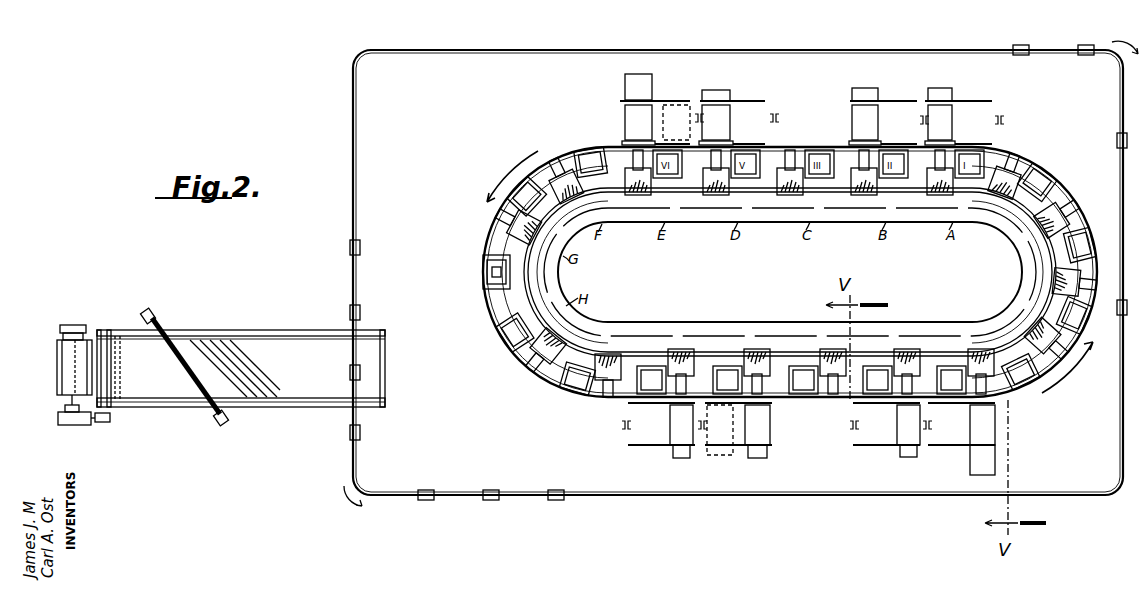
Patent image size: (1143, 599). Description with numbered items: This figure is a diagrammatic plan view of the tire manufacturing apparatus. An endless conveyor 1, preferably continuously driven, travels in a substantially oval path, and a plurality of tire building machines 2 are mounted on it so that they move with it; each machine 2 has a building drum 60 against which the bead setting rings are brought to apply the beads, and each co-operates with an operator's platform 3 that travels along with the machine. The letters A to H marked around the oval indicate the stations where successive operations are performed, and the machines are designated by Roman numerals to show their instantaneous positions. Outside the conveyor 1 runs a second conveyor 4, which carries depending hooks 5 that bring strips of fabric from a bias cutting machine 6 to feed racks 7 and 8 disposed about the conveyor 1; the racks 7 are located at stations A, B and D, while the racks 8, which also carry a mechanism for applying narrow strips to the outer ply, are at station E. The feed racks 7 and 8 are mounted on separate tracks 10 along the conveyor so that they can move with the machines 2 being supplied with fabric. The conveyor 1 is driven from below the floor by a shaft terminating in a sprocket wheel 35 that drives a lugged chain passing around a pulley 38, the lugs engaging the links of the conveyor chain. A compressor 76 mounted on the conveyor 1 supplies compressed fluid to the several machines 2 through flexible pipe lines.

The endless conveyor 1 is at (993, 164).
The tire building machines 2 is at (506, 357).
The operator's platform 3 is at (678, 360).
The second conveyor 4 is at (357, 126).
The depending hooks 5 is at (500, 497).
The bias cutting machine 6 is at (277, 348).
The feed racks 7 is at (720, 120).
The feed racks 8 is at (640, 118).
The tracks 10 is at (684, 141).
The sprocket wheel 35 is at (860, 372).
The pulley 38 is at (780, 368).
The drum 60 is at (536, 376).
The compressor 76 is at (492, 275).